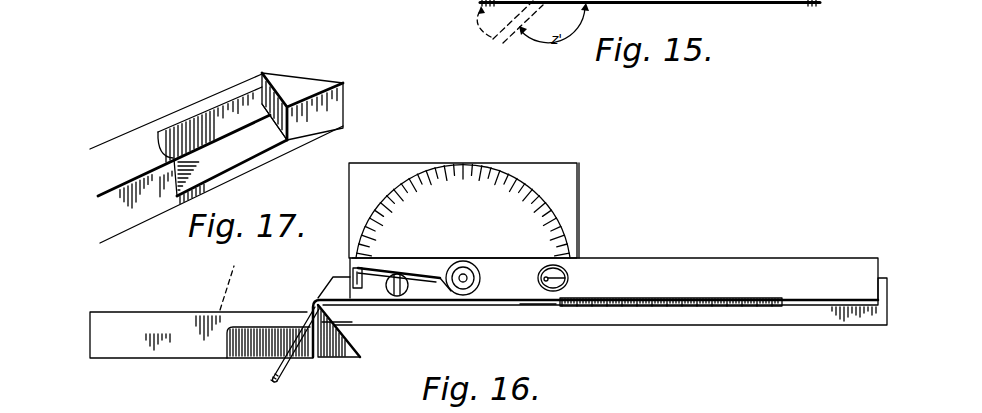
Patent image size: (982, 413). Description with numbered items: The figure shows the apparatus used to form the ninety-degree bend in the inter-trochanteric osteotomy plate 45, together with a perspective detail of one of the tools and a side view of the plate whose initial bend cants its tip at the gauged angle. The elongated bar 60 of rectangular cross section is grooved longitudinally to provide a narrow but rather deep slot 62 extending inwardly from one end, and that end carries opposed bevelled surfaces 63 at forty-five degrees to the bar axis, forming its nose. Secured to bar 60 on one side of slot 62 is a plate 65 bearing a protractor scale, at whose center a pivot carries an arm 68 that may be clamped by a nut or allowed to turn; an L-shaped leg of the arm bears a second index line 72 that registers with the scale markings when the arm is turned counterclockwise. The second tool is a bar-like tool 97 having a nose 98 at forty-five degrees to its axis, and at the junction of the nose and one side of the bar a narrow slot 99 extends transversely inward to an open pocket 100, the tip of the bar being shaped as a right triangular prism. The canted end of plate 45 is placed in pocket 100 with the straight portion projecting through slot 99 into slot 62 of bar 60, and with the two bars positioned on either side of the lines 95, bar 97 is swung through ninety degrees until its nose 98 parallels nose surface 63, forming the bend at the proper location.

In FIG. 16, the inter-trochanteric osteotomy plate 45 is at (523, 302).
In FIG. 16, the elongated bar 60 is at (805, 312).
In FIG. 16, the slot 62 is at (683, 305).
In FIG. 16, the tapered or bevelled surfaces 63 is at (340, 322).
In FIG. 16, the plate 65 is at (578, 184).
In FIG. 16, the arm 68 is at (718, 272).
In FIG. 16, the second index line 72 is at (352, 272).
In FIG. 17, the lines 95 is at (308, 74).
In FIG. 17, the bar-like tool 97 is at (141, 131).
In FIG. 16, the bar-like tool 97 is at (158, 358).
In FIG. 16, the nose 98 is at (357, 352).
In FIG. 17, the narrow slot 99 is at (259, 78).
In FIG. 16, the narrow slot 99 is at (310, 310).
In FIG. 17, the open pocket 100 is at (246, 147).
In FIG. 16, the open pocket 100 is at (249, 350).